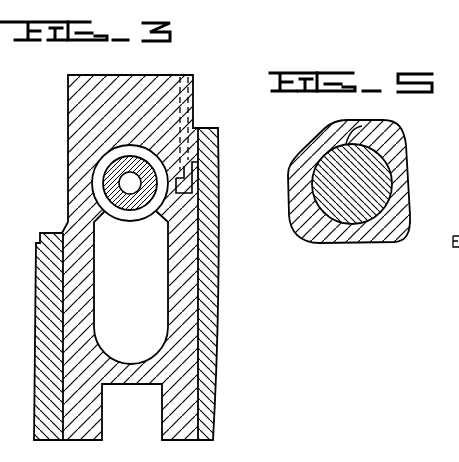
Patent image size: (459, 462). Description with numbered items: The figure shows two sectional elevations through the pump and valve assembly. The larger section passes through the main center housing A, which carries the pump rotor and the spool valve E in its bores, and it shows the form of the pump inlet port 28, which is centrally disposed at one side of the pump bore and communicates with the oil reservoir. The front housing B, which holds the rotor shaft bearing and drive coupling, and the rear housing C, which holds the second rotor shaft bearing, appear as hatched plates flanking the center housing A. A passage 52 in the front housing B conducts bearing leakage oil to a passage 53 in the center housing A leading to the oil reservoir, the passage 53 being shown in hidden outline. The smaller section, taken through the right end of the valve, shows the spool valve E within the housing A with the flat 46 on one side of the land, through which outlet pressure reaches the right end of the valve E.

In FIG. 3, the main center housing A is at (80, 151).
In FIG. 5, the main center housing A is at (368, 240).
In FIG. 3, the front housing B is at (215, 168).
In FIG. 3, the rear housing C is at (41, 238).
In FIG. 3, the spool valve E is at (128, 214).
In FIG. 5, the spool valve E is at (385, 188).
In FIG. 3, the pump inlet port 28 is at (148, 297).
In FIG. 5, the flat 46 is at (355, 144).
In FIG. 3, the passage 52 is at (212, 200).
In FIG. 3, the passage 53 is at (189, 98).